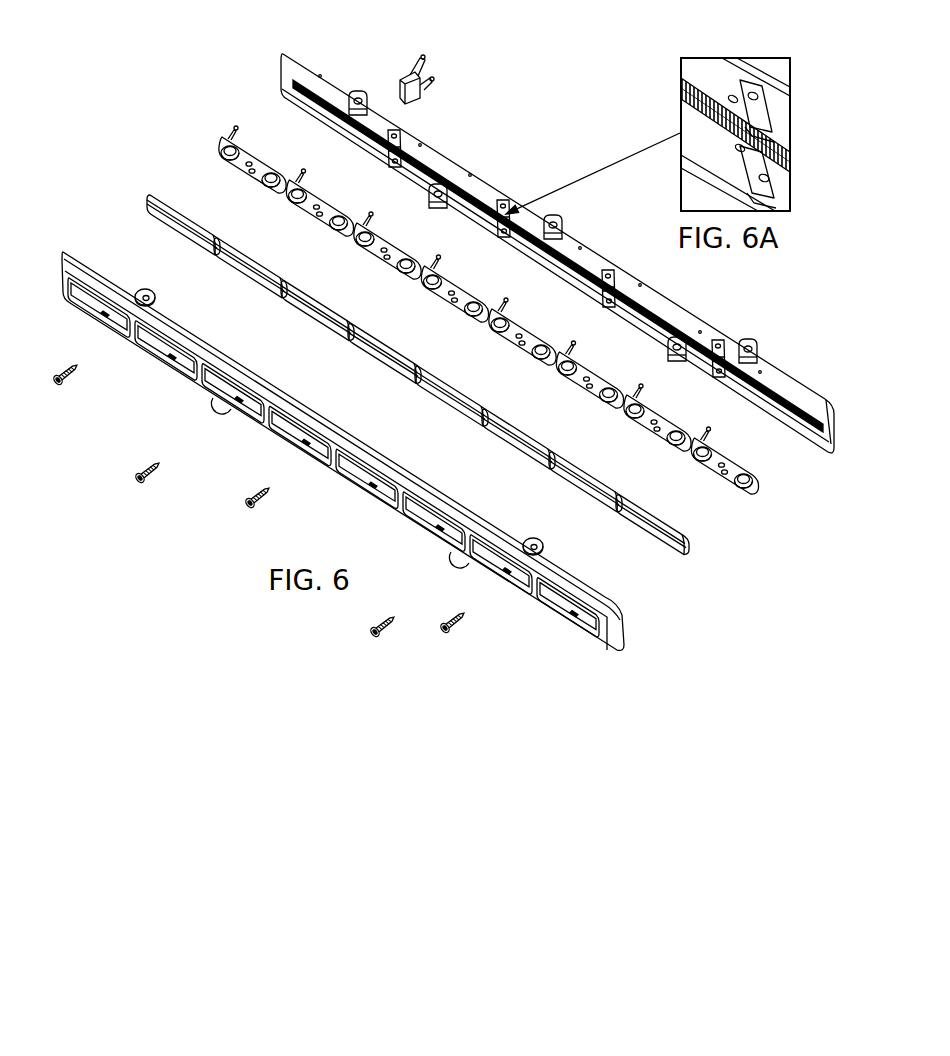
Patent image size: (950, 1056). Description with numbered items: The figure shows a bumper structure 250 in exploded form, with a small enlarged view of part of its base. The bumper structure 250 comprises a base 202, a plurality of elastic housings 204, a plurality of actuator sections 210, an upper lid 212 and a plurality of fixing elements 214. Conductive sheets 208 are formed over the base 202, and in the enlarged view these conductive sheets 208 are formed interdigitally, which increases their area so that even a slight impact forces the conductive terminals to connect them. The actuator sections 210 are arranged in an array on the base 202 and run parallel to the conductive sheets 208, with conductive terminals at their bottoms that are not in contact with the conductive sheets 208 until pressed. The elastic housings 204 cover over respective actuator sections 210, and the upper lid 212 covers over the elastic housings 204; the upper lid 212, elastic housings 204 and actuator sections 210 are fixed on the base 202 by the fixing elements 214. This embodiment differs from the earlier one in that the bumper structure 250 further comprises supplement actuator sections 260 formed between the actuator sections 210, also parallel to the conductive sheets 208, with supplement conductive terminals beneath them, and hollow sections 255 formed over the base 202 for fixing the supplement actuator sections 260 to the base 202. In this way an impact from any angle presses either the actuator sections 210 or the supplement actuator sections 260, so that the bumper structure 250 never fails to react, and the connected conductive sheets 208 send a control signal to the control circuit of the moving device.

In FIG. 6, the base 202 is at (445, 167).
In FIG. 6, the elastic housings 204 is at (192, 250).
In FIG. 6A, the conductive sheets 208 is at (698, 102).
In FIG. 6, the actuator sections 210 is at (263, 178).
In FIG. 6, the upper lid 212 is at (263, 420).
In FIG. 6, the fixing elements 214 is at (258, 500).
In FIG. 6, the bumper structure 250 is at (733, 532).
In FIG. 6A, the hollow sections 255 is at (772, 183).
In FIG. 6, the supplement actuator sections 260 is at (402, 87).